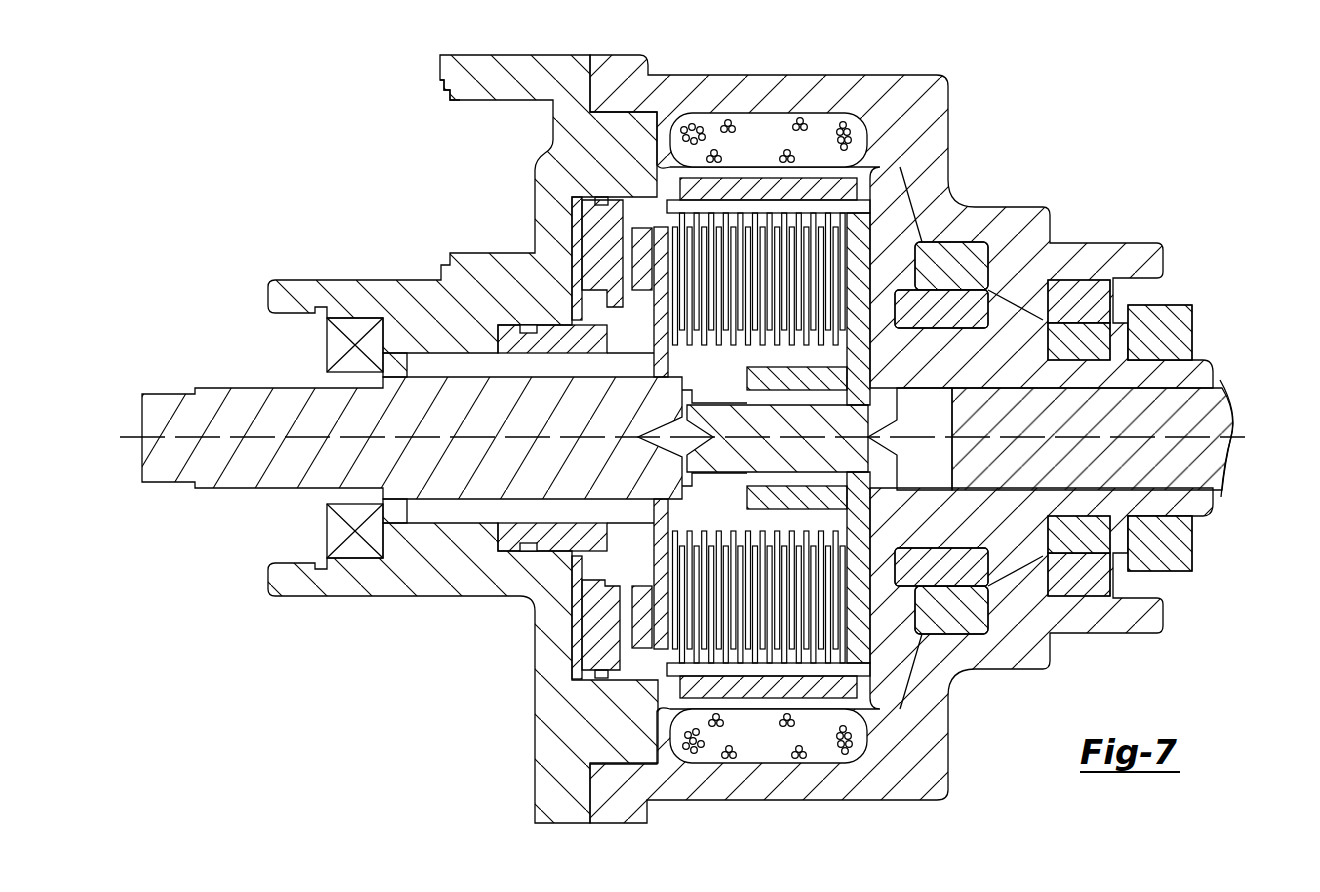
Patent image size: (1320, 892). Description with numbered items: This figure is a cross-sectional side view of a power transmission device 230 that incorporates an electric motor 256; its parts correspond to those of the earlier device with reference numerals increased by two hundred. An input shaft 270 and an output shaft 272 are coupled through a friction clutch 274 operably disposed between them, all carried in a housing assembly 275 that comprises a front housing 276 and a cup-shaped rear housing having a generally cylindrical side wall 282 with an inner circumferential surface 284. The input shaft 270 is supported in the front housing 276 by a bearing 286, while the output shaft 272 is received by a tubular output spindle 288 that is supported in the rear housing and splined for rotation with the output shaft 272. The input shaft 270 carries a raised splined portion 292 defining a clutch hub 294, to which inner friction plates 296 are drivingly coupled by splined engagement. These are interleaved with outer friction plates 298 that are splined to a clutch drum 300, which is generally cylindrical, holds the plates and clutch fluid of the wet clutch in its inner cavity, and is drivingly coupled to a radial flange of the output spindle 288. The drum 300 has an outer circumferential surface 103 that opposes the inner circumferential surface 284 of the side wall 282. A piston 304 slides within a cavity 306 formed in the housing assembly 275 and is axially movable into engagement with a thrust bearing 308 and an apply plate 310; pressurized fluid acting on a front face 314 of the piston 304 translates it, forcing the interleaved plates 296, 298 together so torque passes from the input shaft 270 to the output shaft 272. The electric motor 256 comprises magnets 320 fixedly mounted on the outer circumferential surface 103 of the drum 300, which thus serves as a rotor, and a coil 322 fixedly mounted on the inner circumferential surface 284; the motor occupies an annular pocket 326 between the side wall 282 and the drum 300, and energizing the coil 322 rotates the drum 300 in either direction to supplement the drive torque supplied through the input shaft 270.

The outer circumferential surface 103 is at (823, 190).
The power transmission device 230 is at (674, 50).
The electric motor 256 is at (880, 159).
The input shaft 270 is at (183, 400).
The output shaft 272 is at (1185, 420).
The friction clutch 274 is at (880, 663).
The housing assembly 275 is at (402, 74).
The front housing 276 is at (460, 100).
The side wall 282 is at (810, 84).
The inner circumferential surface 284 is at (706, 118).
The bearing 286 is at (331, 348).
The output spindle 288 is at (993, 493).
The raised splined portion 292 is at (827, 530).
The clutch hub 294 is at (845, 542).
The inner friction plates 296 is at (822, 346).
The outer friction plates 298 is at (770, 226).
The clutch drum 300 is at (868, 205).
The piston 304 is at (566, 216).
The cavity 306 is at (615, 334).
The thrust bearing 308 is at (641, 234).
The apply plate 310 is at (638, 318).
The front face 314 is at (566, 242).
The magnets 320 is at (842, 196).
The coil 322 is at (783, 128).
The annular pocket 326 is at (866, 694).